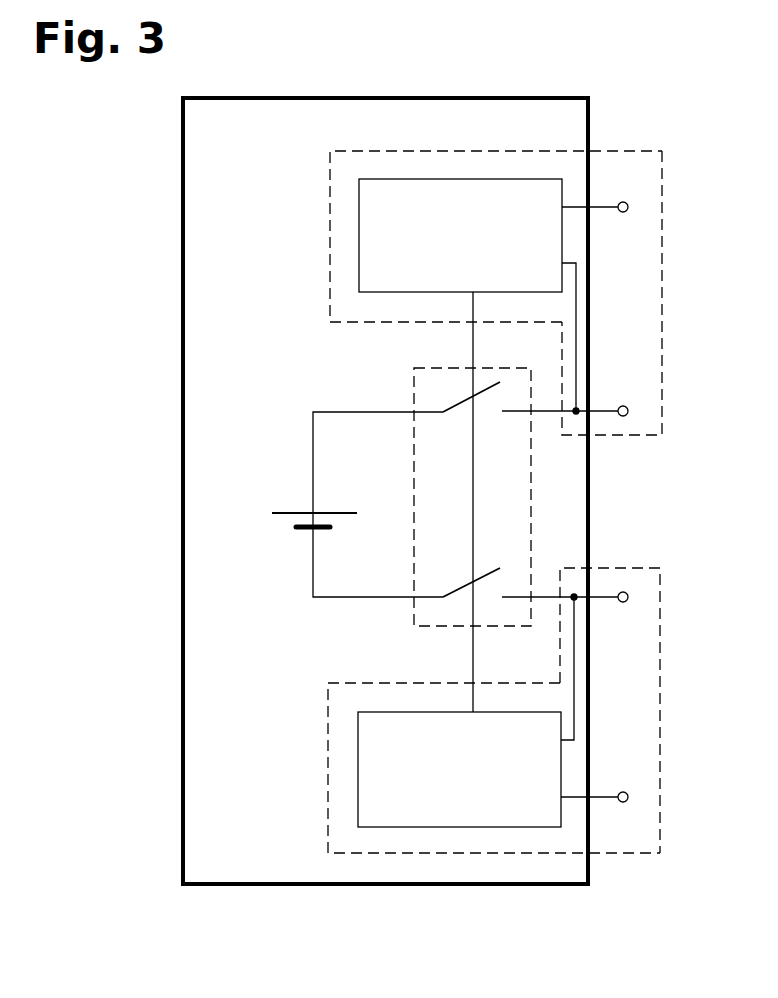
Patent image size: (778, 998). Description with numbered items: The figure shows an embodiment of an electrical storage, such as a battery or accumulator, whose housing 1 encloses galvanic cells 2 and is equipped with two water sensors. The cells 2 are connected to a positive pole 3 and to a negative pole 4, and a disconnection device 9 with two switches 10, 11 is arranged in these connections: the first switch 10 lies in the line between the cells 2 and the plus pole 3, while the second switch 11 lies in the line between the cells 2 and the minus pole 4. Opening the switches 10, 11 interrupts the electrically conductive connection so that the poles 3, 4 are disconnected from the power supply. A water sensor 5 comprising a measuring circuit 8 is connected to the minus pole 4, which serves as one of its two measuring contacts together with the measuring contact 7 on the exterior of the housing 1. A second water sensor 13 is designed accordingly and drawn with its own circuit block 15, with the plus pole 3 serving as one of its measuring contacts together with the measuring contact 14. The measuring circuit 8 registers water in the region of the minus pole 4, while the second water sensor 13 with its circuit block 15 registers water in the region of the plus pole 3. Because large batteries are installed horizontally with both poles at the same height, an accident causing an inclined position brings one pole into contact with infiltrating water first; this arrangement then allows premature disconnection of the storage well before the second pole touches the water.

The housing 1 is at (183, 627).
The cells 2 is at (297, 525).
The positive pole 3 is at (630, 404).
The negative pole 4 is at (628, 590).
The water sensor 5 is at (475, 854).
The measuring contact 7 is at (630, 800).
The measuring circuit 8 is at (445, 787).
The disconnection device 9 is at (413, 626).
The switch 10 is at (490, 390).
The switch 11 is at (460, 588).
The second water sensor 13 is at (459, 151).
The measuring contact 14 is at (627, 203).
The first circuit 15 is at (477, 239).